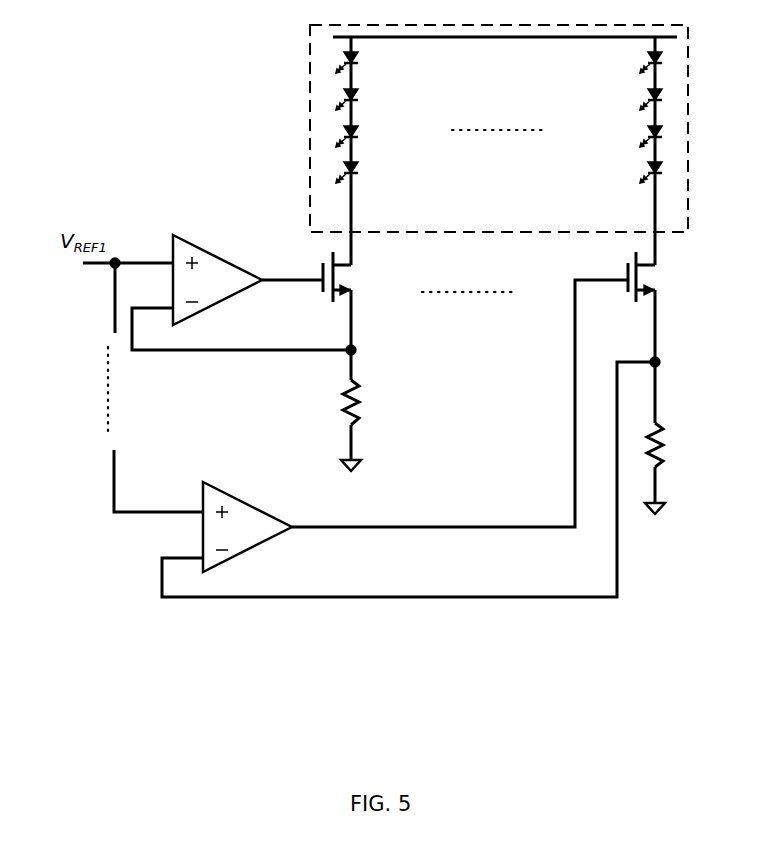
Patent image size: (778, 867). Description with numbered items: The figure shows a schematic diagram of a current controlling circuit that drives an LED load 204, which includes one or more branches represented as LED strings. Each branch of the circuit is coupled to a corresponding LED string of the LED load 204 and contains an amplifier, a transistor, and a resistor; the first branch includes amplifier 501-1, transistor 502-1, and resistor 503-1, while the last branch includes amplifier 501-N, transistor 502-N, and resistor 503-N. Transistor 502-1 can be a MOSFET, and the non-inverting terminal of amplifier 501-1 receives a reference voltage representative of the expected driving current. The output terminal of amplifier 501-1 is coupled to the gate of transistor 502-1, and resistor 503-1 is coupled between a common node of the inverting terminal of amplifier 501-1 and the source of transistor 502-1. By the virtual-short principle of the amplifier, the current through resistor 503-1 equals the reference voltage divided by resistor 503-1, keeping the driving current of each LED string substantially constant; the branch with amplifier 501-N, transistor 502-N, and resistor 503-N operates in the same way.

The LED load 204 is at (500, 220).
The amplifier 501-1 is at (228, 287).
The amplifier 501-N is at (255, 534).
The transistor 502-1 is at (364, 277).
The transistor 502-N is at (671, 277).
The resistor 503-1 is at (379, 402).
The resistor 503-N is at (684, 445).